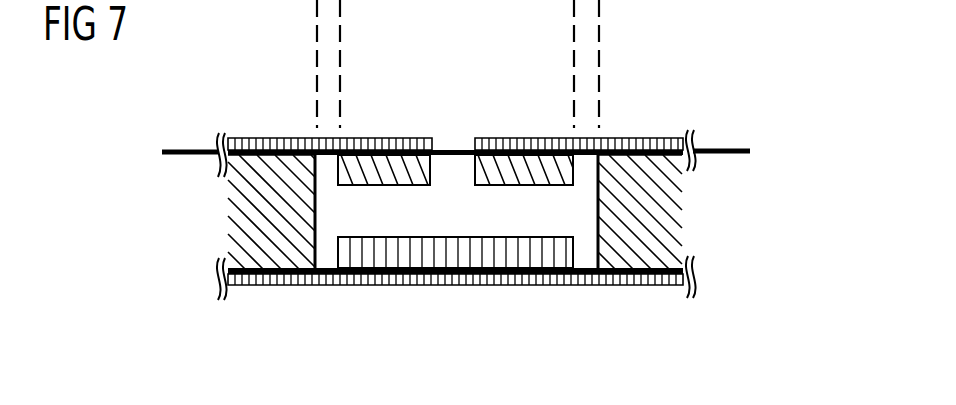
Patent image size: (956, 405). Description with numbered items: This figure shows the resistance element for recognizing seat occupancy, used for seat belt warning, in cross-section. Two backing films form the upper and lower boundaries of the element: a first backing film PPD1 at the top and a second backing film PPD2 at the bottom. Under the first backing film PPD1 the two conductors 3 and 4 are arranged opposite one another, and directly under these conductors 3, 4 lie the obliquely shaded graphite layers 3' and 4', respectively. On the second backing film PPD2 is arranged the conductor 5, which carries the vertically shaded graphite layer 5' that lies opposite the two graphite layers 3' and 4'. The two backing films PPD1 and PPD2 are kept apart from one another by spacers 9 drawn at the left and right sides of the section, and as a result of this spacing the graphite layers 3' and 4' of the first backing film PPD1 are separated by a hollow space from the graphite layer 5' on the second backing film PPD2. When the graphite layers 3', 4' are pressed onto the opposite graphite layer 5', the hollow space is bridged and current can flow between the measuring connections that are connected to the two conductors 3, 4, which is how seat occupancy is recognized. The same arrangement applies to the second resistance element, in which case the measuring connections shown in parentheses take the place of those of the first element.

The conductor 3 is at (384, 132).
The graphite layer 3' is at (389, 117).
The conductor 4 is at (524, 132).
The graphite layer 4' is at (524, 117).
The conductor 5 is at (455, 295).
The graphite layer 5' is at (455, 310).
The spacer 9 is at (280, 165).
The first backing film PPD1 is at (365, 143).
The second backing film PPD2 is at (375, 286).